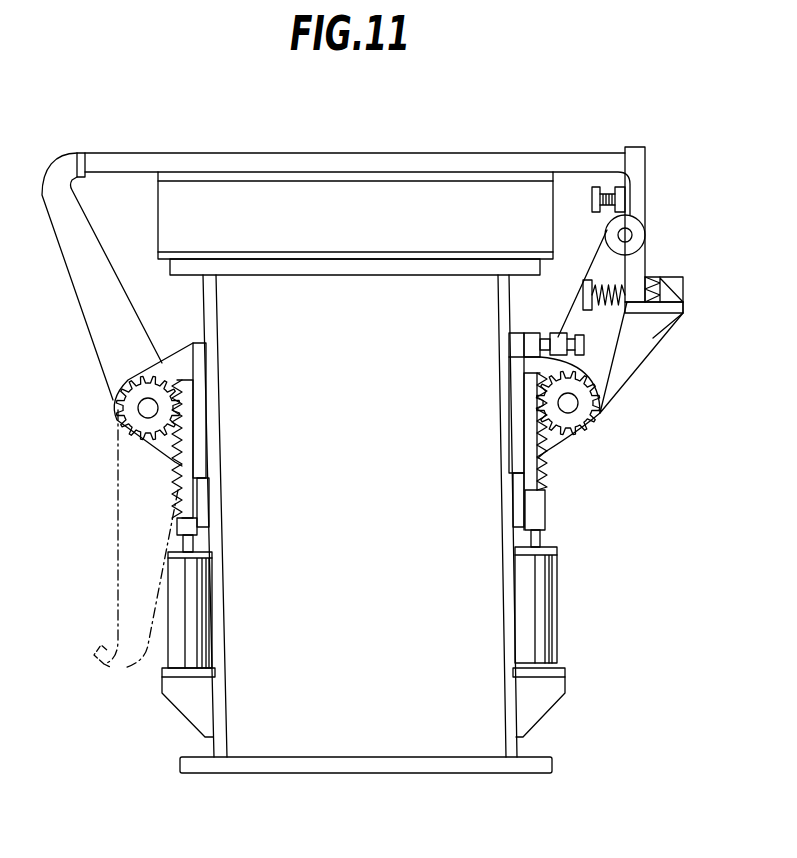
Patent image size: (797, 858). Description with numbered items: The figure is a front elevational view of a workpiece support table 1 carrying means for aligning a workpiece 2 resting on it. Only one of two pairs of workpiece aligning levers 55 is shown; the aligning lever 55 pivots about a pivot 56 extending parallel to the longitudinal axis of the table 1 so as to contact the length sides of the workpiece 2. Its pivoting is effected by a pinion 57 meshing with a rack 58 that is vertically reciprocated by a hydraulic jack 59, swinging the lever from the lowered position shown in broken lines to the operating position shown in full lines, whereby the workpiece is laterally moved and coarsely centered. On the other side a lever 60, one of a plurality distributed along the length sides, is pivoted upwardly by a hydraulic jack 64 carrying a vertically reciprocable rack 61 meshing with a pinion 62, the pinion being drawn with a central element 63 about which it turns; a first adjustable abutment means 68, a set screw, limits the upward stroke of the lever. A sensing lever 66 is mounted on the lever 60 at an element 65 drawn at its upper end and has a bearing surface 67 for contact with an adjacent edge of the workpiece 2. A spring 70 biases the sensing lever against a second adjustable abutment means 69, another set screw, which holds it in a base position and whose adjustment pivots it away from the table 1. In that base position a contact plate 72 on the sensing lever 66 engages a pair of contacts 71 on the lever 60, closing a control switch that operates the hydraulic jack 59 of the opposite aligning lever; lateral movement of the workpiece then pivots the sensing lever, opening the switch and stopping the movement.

The table 1 is at (470, 688).
The workpiece 2 is at (258, 160).
The workpiece aligning lever 55 is at (125, 319).
The pivot 56 is at (150, 408).
The pinion 57 is at (130, 385).
The rack 58 is at (178, 492).
The hydraulic jack 59 is at (185, 612).
The lever 60 is at (593, 370).
The rack 61 is at (532, 492).
The pinion 62 is at (592, 420).
The gear shaft 63 is at (572, 406).
The hydraulic jack 64 is at (540, 622).
The pivot pin 65 is at (630, 232).
The sensing lever 66 is at (640, 182).
The bearing surface 67 is at (632, 149).
The first adjustable abutment means 68 is at (550, 356).
The second adjustable abutment means 69 is at (600, 190).
The spring 70 is at (612, 293).
The pair of contacts 71 is at (652, 289).
The contact plate 72 is at (680, 320).